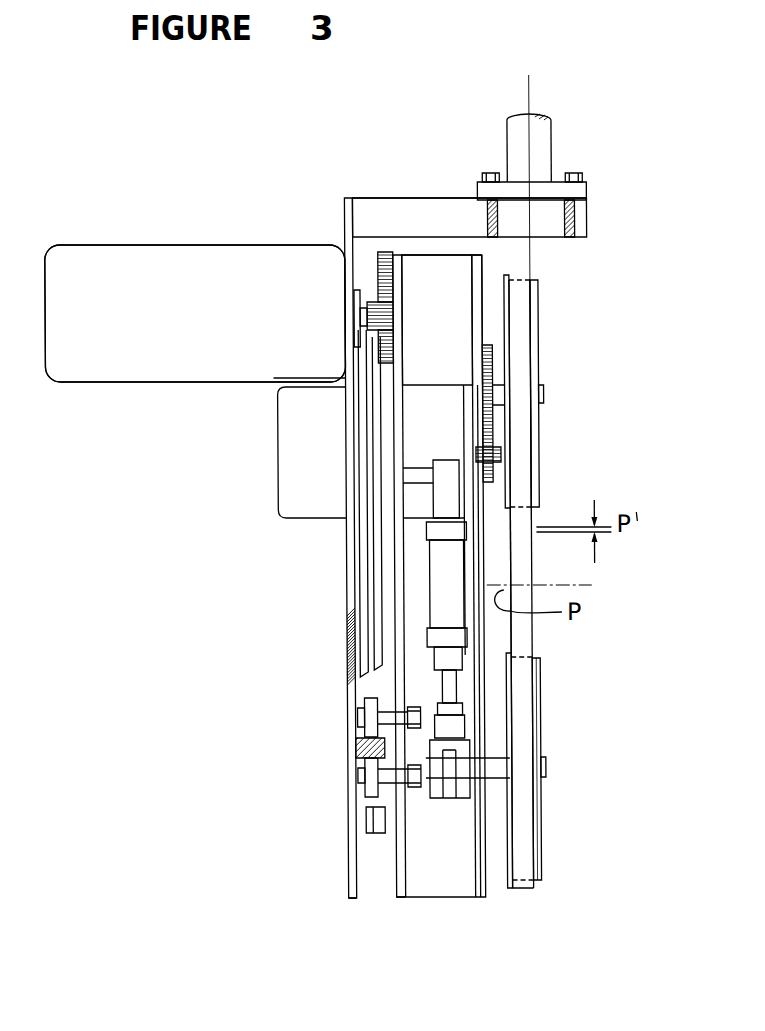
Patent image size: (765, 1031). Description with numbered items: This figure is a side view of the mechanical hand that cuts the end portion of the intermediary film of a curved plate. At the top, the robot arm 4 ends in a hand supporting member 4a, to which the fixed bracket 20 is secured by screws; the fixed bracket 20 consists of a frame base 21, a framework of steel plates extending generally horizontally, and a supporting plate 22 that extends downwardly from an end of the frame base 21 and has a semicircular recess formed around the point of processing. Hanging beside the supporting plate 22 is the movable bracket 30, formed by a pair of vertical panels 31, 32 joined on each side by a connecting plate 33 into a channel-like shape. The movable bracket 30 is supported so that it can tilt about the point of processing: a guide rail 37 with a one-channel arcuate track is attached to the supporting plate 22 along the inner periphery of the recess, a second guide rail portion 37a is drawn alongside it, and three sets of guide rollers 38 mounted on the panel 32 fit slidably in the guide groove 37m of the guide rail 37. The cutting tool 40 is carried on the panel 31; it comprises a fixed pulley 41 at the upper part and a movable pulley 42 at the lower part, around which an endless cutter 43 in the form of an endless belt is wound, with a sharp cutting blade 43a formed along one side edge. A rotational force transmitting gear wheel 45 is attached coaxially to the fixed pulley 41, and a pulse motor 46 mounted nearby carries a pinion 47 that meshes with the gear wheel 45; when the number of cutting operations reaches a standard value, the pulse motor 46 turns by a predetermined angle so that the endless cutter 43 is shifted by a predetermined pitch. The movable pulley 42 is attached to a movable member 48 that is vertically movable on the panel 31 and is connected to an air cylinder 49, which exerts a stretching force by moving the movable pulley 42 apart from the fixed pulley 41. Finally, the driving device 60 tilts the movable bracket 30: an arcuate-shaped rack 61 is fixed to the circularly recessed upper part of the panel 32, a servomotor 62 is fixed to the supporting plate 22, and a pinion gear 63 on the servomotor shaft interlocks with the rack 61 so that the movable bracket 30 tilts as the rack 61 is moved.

The robot arm 4 is at (543, 147).
The hand supporting member 4a is at (580, 194).
The fixed bracket 20 is at (363, 199).
The frame base 21 is at (410, 200).
The supporting plate 22 is at (345, 210).
The movable bracket 30 is at (488, 889).
The panel 31 is at (482, 273).
The panel 32 is at (393, 870).
The connecting plate 33 is at (445, 272).
The guide rail 37 is at (358, 533).
The second guide rod 37a is at (372, 570).
The guide groove 37m is at (372, 765).
The guide rollers 38 is at (368, 720).
The cutting tool 40 is at (539, 705).
The fixed pulley 41 is at (538, 470).
The movable pulley 42 is at (540, 738).
The endless cutter 43 is at (522, 630).
The cutting blade 43a is at (510, 547).
The rotational force transmitting gear wheel 45 is at (492, 362).
The pulse motor 46 is at (300, 447).
The pinion 47 is at (492, 447).
The movable member 48 is at (458, 790).
The air cylinder 49 is at (442, 595).
The driving device 60 is at (143, 247).
The arcuate-shaped rack 61 is at (380, 270).
The servomotor 62 is at (97, 262).
The pinion gear 63 is at (365, 318).